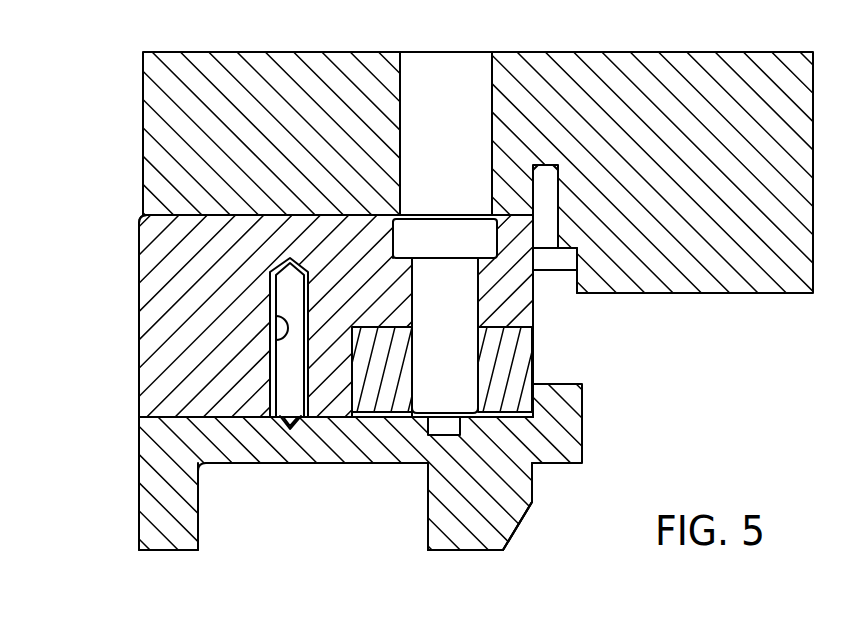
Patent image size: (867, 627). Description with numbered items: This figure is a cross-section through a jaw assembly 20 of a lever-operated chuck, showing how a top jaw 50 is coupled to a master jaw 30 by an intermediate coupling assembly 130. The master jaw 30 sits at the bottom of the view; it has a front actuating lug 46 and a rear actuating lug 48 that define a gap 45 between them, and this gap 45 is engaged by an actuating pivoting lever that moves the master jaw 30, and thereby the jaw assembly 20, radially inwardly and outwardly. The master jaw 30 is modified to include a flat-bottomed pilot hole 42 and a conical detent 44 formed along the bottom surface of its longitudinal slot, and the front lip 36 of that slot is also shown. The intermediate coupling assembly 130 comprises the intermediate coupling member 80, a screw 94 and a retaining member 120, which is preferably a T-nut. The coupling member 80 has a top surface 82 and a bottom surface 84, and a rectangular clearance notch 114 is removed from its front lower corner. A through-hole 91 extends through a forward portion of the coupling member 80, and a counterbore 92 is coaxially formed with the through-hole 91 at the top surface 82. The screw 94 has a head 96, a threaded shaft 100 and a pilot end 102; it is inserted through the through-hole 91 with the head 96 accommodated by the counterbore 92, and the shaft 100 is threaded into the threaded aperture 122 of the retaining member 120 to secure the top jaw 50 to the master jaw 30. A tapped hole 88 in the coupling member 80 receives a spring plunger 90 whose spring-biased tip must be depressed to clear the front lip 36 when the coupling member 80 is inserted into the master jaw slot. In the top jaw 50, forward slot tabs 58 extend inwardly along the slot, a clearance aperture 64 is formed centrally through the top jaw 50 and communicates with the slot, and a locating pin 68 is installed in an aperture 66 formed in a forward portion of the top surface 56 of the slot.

The jaw assembly 20 is at (175, 42).
The top jaw 50 is at (760, 42).
The clearance aperture 64 is at (402, 86).
The aperture 66 is at (553, 186).
The forward slot tabs 58 is at (552, 283).
The locating pin 68 is at (560, 228).
The intermediate coupling member 80 is at (130, 228).
The top surface 82 is at (190, 215).
The top surface 56 is at (200, 216).
The intermediate coupling assembly 130 is at (130, 312).
The counterbore 92 is at (490, 229).
The head 96 is at (393, 240).
The screw 94 is at (398, 284).
The through-hole 91 is at (475, 278).
The threaded shaft 100 is at (480, 302).
The threaded aperture 122 is at (413, 380).
The tapped hole 88 is at (276, 340).
The spring plunger 90 is at (272, 388).
The conical detent 44 is at (297, 428).
The front lip 36 is at (139, 418).
The master jaw 30 is at (597, 427).
The bottom surface 84 is at (162, 432).
The rear actuating lug 48 is at (172, 530).
The gap 45 is at (252, 525).
The flat-bottomed pilot hole 42 is at (433, 436).
The front actuating lug 46 is at (487, 537).
The pilot end 102 is at (532, 502).
The rectangular clearance notch 114 is at (382, 417).
The retaining member 120 is at (363, 430).